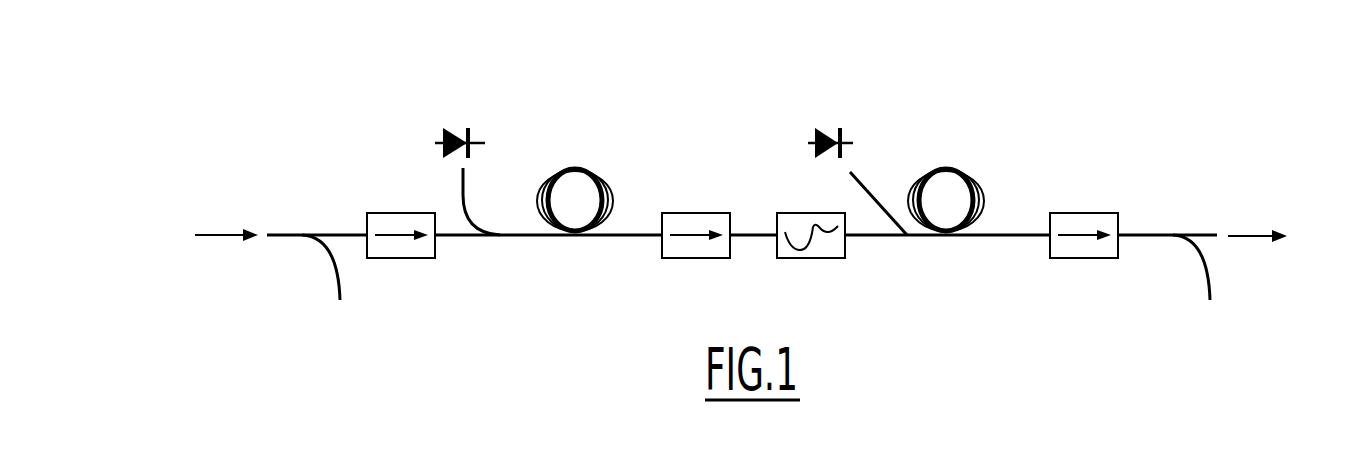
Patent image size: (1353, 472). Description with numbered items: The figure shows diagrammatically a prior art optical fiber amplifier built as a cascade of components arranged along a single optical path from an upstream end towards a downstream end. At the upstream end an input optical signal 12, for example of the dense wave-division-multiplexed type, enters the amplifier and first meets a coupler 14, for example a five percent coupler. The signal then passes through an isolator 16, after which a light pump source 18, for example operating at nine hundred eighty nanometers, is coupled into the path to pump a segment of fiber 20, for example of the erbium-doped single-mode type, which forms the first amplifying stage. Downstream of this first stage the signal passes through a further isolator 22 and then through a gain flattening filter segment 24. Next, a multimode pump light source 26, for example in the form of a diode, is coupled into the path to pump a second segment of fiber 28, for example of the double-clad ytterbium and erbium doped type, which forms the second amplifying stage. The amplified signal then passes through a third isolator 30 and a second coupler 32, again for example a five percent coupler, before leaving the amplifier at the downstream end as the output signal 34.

The input optical signal 12 is at (209, 233).
The coupler 14 is at (300, 263).
The isolator 16 is at (415, 270).
The light pump source 18 is at (457, 115).
The segment of fiber 20 is at (577, 155).
The isolator 22 is at (690, 272).
The gain flattening filter segment 24 is at (817, 270).
The multimode pump light source 26 is at (825, 122).
The segment of fiber 28 is at (955, 155).
The isolator 30 is at (1080, 270).
The coupler 32 is at (1185, 268).
The output signal 34 is at (1280, 233).